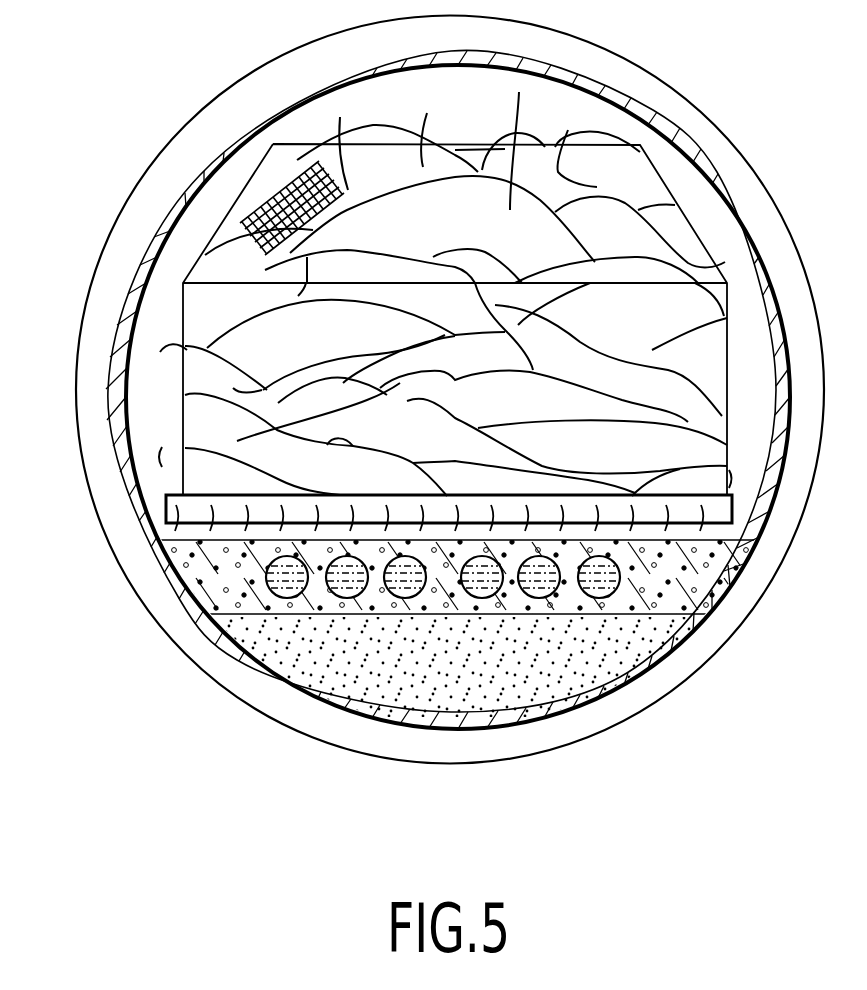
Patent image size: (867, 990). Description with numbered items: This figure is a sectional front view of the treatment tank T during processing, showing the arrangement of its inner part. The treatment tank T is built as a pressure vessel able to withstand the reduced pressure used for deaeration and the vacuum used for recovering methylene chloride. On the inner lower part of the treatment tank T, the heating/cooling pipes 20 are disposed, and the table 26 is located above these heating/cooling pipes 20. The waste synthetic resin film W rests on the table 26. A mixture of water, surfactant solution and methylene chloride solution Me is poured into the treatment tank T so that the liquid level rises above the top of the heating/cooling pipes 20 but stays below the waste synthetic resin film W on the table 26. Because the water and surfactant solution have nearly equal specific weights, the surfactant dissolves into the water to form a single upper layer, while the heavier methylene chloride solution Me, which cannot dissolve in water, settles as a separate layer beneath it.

The treatment tank T is at (233, 135).
The waste synthetic resin film W is at (445, 289).
The table 26 is at (228, 503).
The heating/cooling pipes 20 is at (347, 582).
The methylene chloride solution Me is at (408, 688).